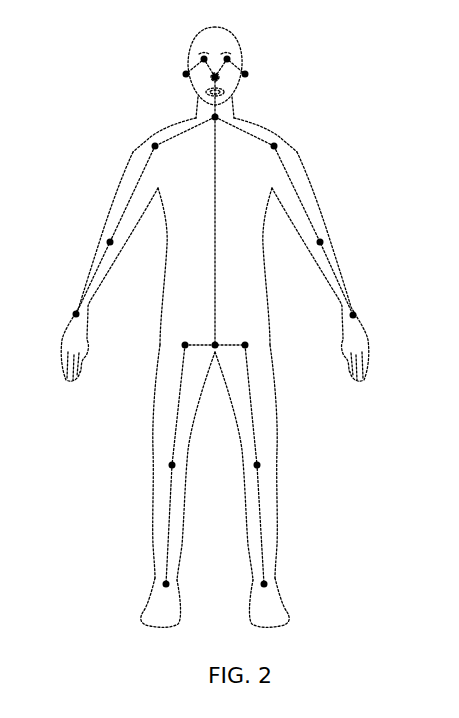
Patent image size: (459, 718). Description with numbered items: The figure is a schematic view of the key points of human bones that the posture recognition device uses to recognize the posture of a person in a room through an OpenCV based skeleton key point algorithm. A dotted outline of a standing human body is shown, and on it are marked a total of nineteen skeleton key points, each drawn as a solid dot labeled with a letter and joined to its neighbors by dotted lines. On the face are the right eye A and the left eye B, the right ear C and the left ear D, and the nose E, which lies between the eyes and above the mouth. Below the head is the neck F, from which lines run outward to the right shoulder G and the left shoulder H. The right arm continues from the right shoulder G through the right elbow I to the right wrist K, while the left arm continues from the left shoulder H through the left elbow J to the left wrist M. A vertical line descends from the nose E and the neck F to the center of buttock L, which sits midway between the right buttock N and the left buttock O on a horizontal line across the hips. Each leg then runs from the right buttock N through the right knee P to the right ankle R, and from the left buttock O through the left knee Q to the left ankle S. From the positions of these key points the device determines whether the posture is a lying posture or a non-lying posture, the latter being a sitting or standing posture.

The right eye A is at (201, 59).
The left eye B is at (230, 59).
The right ear C is at (183, 74).
The left ear D is at (248, 74).
The nose E is at (212, 78).
The neck F is at (212, 117).
The right shoulder G is at (152, 146).
The left shoulder H is at (277, 146).
The right elbow I is at (107, 242).
The left elbow J is at (323, 242).
The right wrist K is at (73, 314).
The center of buttock L is at (212, 344).
The left wrist M is at (356, 315).
The right buttock N is at (182, 345).
The left buttock O is at (248, 345).
The right knee P is at (169, 465).
The left knee Q is at (260, 465).
The right ankle R is at (163, 584).
The left ankle S is at (267, 584).